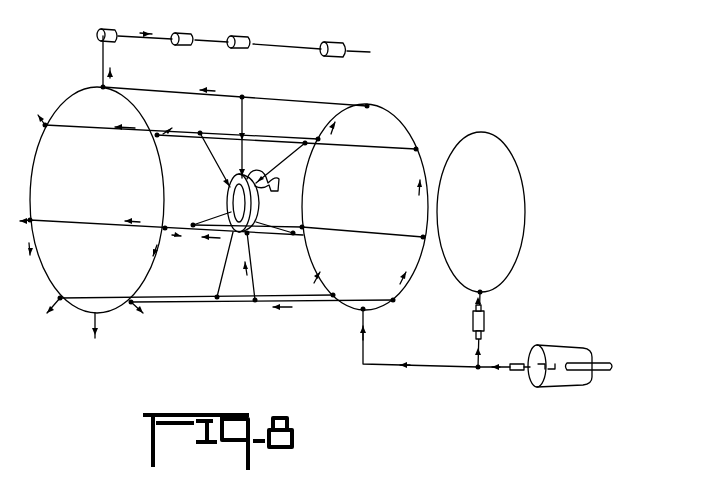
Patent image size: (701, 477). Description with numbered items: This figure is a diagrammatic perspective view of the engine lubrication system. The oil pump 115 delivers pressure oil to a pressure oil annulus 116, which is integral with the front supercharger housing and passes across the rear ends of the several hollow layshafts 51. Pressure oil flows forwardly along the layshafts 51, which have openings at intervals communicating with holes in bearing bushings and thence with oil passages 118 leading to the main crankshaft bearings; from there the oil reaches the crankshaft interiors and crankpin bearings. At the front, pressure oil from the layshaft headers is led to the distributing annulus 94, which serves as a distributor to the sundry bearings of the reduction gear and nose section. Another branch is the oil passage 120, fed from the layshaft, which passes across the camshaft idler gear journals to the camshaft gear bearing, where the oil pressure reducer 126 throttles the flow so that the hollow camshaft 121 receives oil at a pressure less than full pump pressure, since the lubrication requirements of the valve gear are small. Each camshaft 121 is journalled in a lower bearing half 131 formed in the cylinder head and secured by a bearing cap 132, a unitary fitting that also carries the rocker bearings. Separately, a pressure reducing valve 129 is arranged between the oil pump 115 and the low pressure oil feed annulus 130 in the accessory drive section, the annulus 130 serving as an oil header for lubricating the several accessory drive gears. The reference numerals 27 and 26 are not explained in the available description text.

The distributing annulus 94 is at (82, 92).
The pressure oil annulus 116 is at (405, 126).
The low pressure oil feed annulus 130 is at (505, 262).
The pressure reducing valve 129 is at (485, 318).
The oil pump 115 is at (552, 347).
The oil passage 120 is at (112, 58).
The oil pressure reducer 126 is at (113, 30).
The camshaft 121 is at (258, 43).
The lower bearing half 131 is at (178, 33).
The bearing cap 132 is at (238, 36).
The spray ring 27 is at (231, 198).
The nozzle 26 is at (274, 184).
The oil passage 118 is at (250, 275).
The layshaft 51 is at (300, 300).